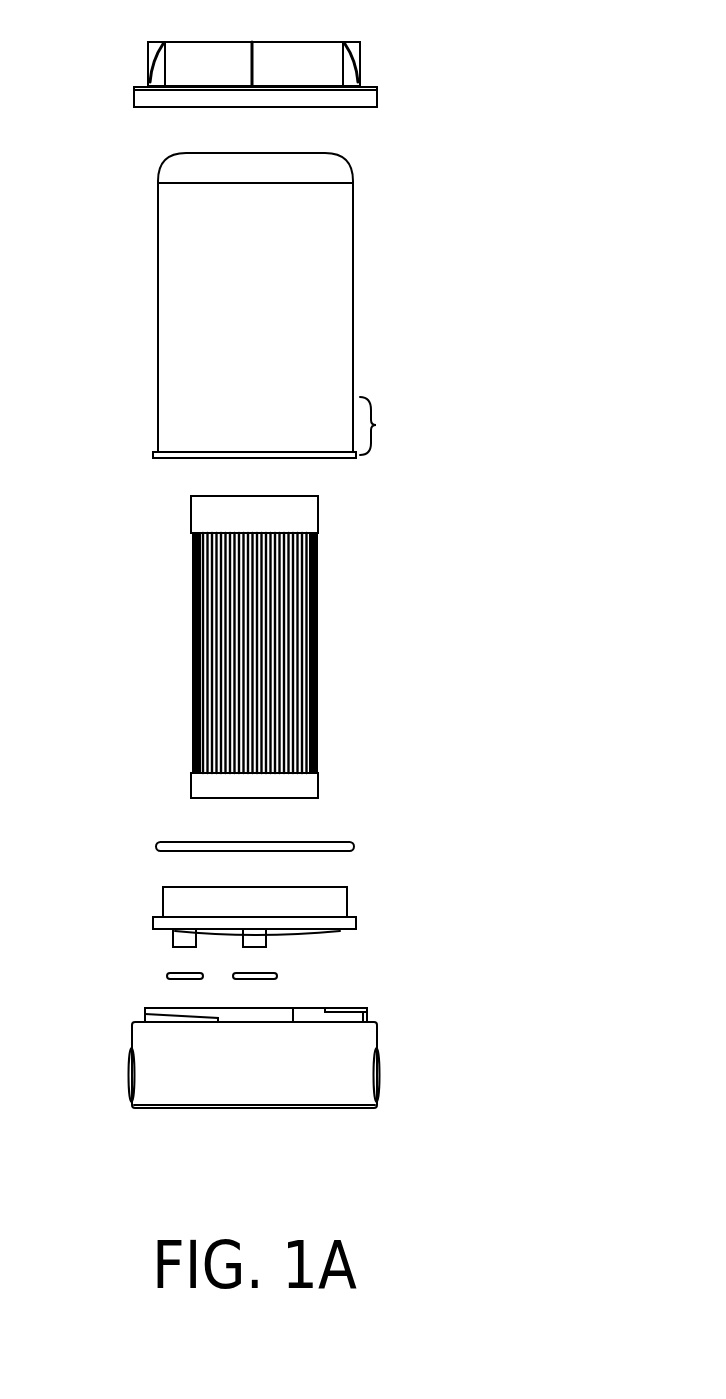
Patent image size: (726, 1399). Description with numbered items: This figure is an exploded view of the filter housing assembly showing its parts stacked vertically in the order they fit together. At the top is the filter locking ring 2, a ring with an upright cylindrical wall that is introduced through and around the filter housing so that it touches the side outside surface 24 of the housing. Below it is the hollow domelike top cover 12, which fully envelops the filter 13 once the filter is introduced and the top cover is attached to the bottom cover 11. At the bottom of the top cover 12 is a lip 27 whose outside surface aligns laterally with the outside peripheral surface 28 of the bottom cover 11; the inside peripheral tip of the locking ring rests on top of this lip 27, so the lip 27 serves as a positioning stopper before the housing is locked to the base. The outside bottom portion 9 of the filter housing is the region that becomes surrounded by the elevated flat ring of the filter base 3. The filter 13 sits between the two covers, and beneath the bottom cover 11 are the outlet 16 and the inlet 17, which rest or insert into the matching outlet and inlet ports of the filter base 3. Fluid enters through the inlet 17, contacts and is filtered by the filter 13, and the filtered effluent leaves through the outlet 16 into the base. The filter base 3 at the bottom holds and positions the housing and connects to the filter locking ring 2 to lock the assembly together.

The filter locking ring 2 is at (320, 72).
The hollow domelike top cover 12 is at (313, 287).
The side outside surface 24 is at (158, 327).
The lip 27 is at (155, 450).
The outside bottom portion 9 is at (376, 425).
The filter 13 is at (302, 665).
The bottom cover 11 is at (347, 906).
The outside peripheral surface 28 is at (153, 926).
The inlet 17 is at (185, 938).
The outlet 16 is at (257, 938).
The filter base 3 is at (347, 1042).